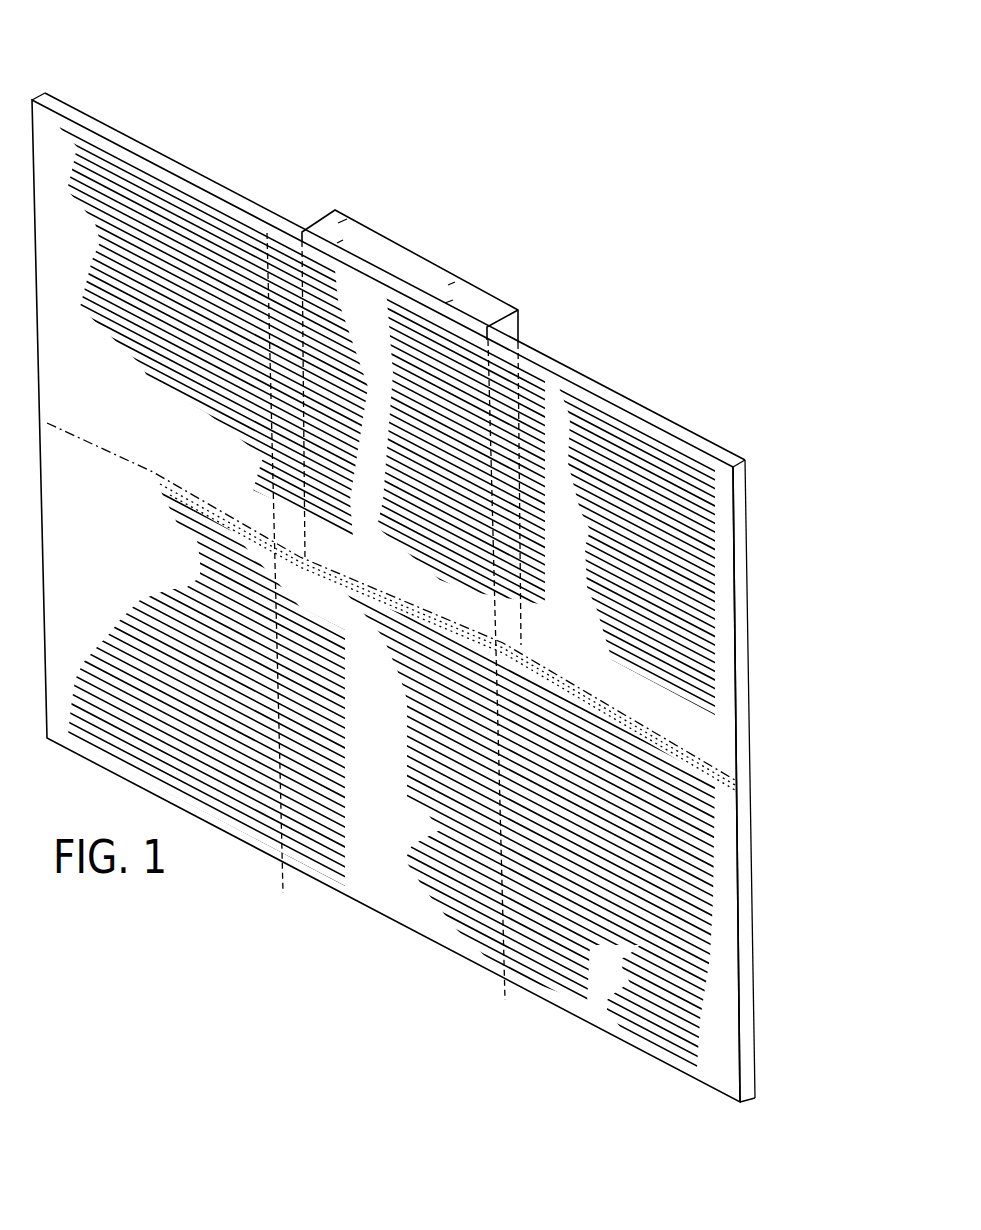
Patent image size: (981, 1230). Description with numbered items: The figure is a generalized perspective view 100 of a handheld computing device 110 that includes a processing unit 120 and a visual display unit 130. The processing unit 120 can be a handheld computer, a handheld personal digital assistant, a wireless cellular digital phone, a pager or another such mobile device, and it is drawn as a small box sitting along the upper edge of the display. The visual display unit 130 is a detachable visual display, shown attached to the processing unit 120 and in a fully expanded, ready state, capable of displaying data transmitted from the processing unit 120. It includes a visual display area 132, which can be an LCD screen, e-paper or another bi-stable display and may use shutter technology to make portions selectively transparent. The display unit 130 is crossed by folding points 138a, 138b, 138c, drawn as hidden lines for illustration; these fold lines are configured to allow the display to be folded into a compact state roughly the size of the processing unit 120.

The generalized perspective view 100 is at (707, 132).
The handheld computing device 110 is at (651, 360).
The processing unit 120 is at (410, 274).
The visual display unit 130 is at (760, 507).
The visual display area 132 is at (700, 606).
The folding point 138a is at (756, 790).
The folding point 138b is at (515, 703).
The folding point 138c is at (286, 592).